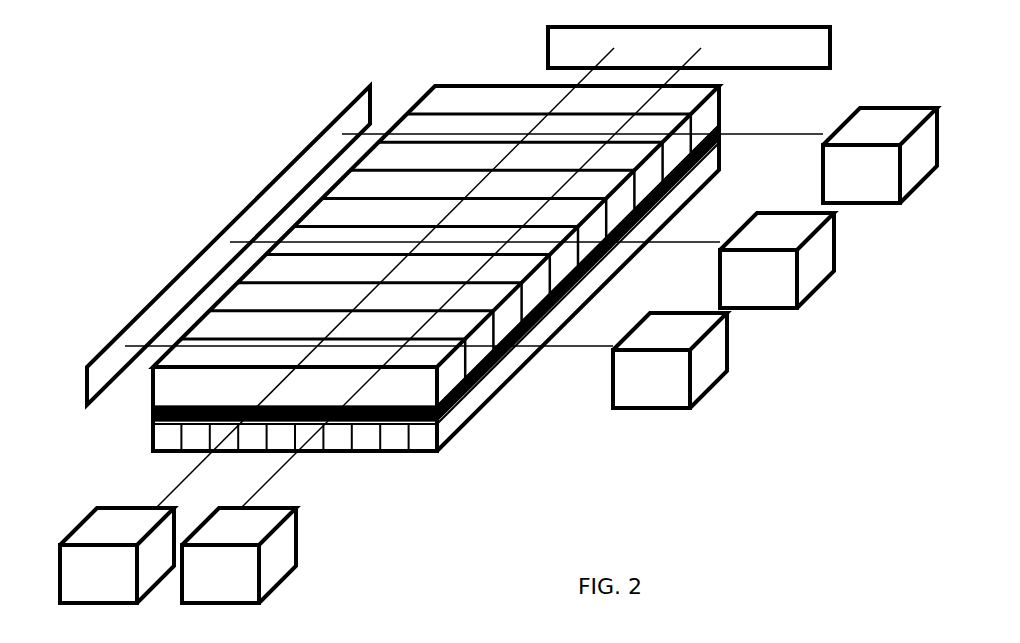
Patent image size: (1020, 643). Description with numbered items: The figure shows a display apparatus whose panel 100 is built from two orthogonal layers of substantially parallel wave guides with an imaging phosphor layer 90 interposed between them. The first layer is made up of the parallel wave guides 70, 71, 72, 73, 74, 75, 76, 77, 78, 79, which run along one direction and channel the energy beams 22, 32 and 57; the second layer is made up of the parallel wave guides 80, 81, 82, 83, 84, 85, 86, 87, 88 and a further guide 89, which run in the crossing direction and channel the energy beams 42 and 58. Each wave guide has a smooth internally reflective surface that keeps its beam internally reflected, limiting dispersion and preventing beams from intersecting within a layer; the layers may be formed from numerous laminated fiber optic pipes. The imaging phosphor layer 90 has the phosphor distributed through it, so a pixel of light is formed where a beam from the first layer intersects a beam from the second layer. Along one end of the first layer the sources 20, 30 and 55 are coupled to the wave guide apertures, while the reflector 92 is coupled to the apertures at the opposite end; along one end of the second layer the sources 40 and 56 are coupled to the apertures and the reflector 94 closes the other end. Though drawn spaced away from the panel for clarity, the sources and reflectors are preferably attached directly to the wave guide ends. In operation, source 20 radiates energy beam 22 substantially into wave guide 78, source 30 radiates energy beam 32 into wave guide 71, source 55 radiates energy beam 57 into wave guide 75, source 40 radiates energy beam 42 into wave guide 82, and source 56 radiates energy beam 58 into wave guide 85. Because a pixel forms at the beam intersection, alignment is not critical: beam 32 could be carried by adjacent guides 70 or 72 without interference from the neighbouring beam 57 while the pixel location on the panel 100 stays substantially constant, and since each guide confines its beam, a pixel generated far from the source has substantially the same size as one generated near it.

The panel 100 is at (455, 105).
The imaging phosphor layer 90 is at (155, 412).
The reflector 92 is at (105, 365).
The reflector 94 is at (689, 47).
The source 20 is at (880, 155).
The energy beam 22 is at (795, 134).
The source 30 is at (670, 360).
The energy beam 32 is at (587, 350).
The source 40 is at (117, 555).
The energy beam 42 is at (155, 505).
The source 55 is at (777, 260).
The source 56 is at (239, 555).
The energy beam 57 is at (700, 244).
The energy beam 58 is at (278, 475).
The wave guide 70 is at (473, 387).
The wave guide 71 is at (497, 353).
The wave guide 72 is at (527, 325).
The wave guide 73 is at (557, 293).
The wave guide 74 is at (582, 272).
The wave guide 75 is at (608, 240).
The wave guide 76 is at (643, 213).
The wave guide 77 is at (673, 183).
The wave guide 78 is at (700, 158).
The wave guide 79 is at (720, 133).
The wave guide 80 is at (170, 433).
The wave guide 81 is at (195, 443).
The wave guide 82 is at (210, 452).
The wave guide 83 is at (237, 450).
The wave guide 84 is at (262, 450).
The wave guide 85 is at (313, 447).
The wave guide 86 is at (343, 447).
The wave guide 87 is at (370, 447).
The wave guide 88 is at (398, 447).
The column segment 89 is at (427, 447).